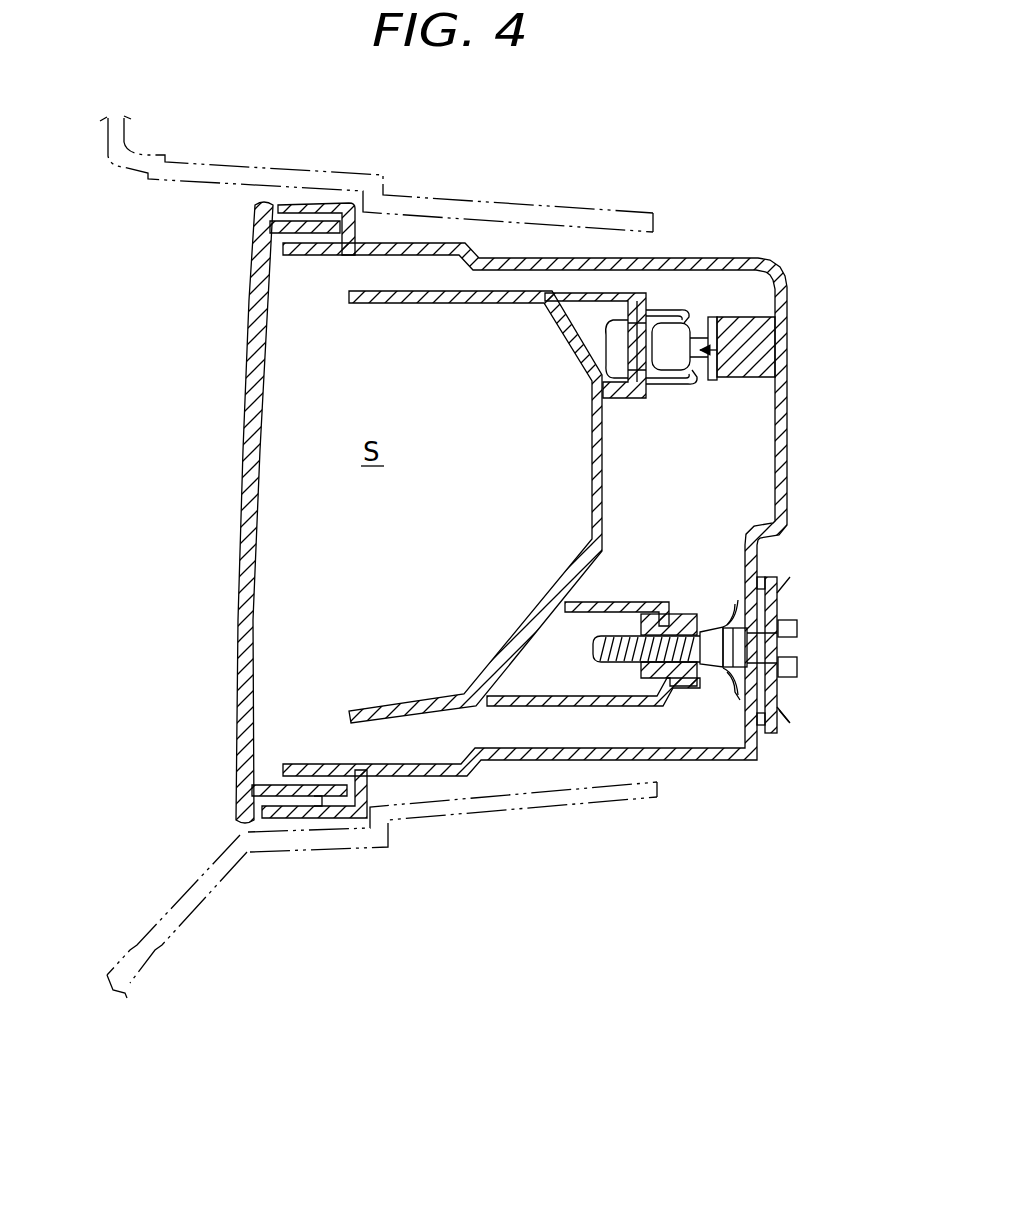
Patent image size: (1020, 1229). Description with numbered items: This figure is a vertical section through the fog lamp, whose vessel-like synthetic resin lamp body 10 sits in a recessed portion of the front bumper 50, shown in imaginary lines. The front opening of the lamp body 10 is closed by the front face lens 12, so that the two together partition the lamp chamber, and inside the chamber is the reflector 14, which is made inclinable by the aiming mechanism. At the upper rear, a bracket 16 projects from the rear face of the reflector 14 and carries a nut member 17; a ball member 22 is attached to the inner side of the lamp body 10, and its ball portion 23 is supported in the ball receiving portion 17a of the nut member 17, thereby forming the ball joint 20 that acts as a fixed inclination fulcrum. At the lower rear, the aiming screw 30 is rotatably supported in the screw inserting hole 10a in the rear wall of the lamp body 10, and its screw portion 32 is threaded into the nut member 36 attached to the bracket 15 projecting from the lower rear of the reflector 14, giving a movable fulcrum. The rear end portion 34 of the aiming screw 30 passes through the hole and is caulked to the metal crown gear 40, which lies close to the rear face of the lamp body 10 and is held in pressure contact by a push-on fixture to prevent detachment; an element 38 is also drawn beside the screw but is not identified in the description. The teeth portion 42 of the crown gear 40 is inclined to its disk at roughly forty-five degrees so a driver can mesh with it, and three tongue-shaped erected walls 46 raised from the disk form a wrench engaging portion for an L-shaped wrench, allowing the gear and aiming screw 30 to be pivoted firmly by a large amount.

The lamp body 10 is at (788, 458).
The screw inserting hole 10a is at (793, 653).
The front face lens 12 is at (243, 480).
The reflector 14 is at (506, 296).
The bracket 15 is at (605, 707).
The bracket 16 is at (603, 308).
The nut member 17 is at (675, 316).
The ball receiving portion 17a is at (686, 371).
The ball joint 20 is at (772, 200).
The ball member 22 is at (760, 324).
The ball portion 23 is at (683, 337).
The aiming screw 30 is at (717, 625).
The screw portion 32 is at (632, 614).
The rear end portion 34 is at (799, 667).
The nut member 36 is at (683, 688).
The washer 38 is at (737, 690).
The crown gear 40 is at (800, 670).
The teeth portion 42 is at (788, 716).
The erected walls 46 is at (790, 592).
The front bumper 50 is at (112, 160).